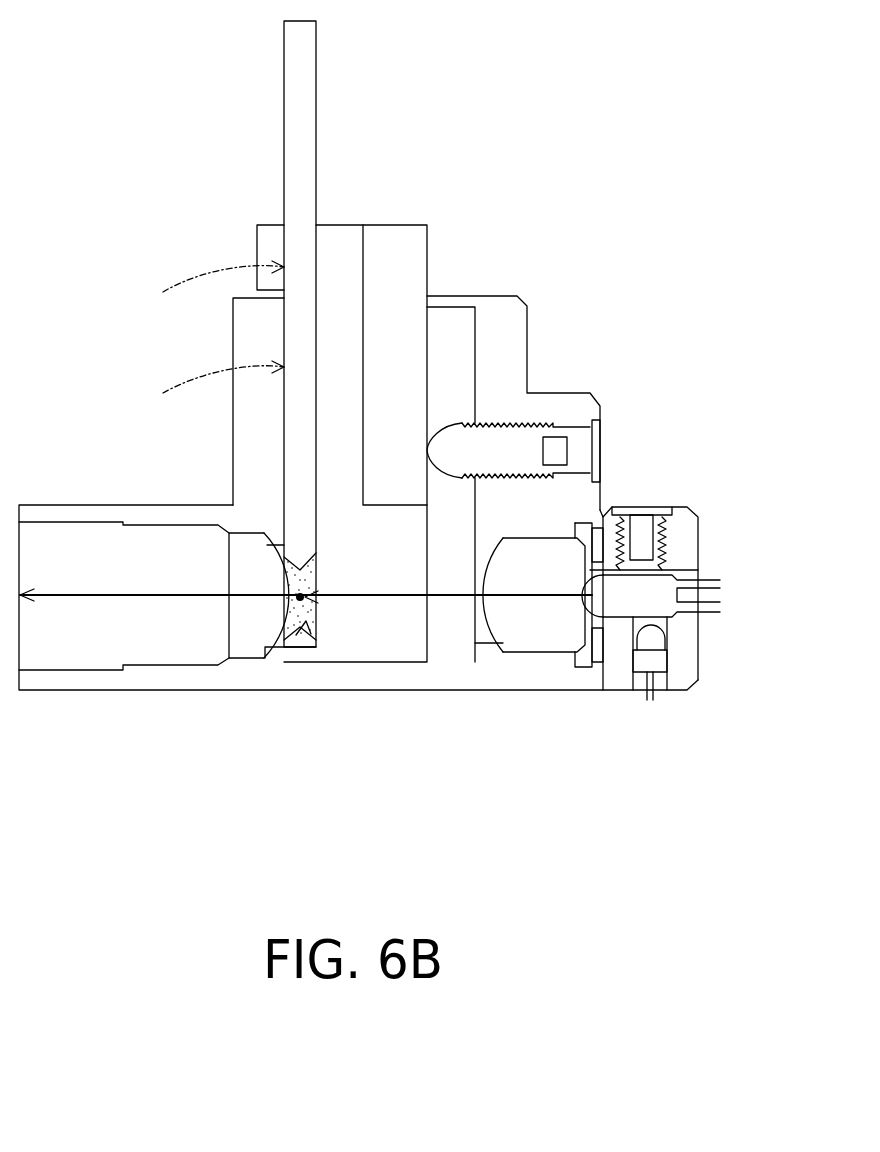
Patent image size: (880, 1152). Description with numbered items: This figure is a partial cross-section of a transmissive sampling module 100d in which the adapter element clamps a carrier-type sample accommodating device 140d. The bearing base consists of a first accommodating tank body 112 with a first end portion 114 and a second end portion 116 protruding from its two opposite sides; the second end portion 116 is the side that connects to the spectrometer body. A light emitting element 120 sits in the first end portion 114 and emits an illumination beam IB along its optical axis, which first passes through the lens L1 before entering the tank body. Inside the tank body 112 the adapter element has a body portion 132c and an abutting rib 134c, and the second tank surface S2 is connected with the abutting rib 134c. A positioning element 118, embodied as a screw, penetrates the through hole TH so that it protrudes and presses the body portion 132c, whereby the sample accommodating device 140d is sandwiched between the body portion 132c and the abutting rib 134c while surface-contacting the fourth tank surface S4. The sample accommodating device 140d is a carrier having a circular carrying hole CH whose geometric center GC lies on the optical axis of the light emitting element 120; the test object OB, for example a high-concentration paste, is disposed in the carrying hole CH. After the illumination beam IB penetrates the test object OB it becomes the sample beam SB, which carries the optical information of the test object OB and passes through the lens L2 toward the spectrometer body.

The transmissive sampling module 100d is at (752, 822).
The sample accommodating device 140d is at (303, 72).
The body portion 132c is at (392, 245).
The abutting rib 134c is at (270, 242).
The fourth tank surface S4 is at (206, 285).
The second tank surface S2 is at (206, 386).
The first accommodating tank body 112 is at (505, 330).
The positioning element 118 is at (522, 447).
The through hole TH is at (598, 448).
The first end portion 114 is at (677, 513).
The second end portion 116 is at (69, 505).
The light emitting element 120 is at (620, 600).
The lens L1 is at (542, 635).
The lens L2 is at (250, 633).
The sample beam SB is at (128, 592).
The illumination beam IB is at (400, 590).
The carrying hole CH is at (307, 645).
The geometric center GC is at (313, 610).
The test object OB is at (322, 580).